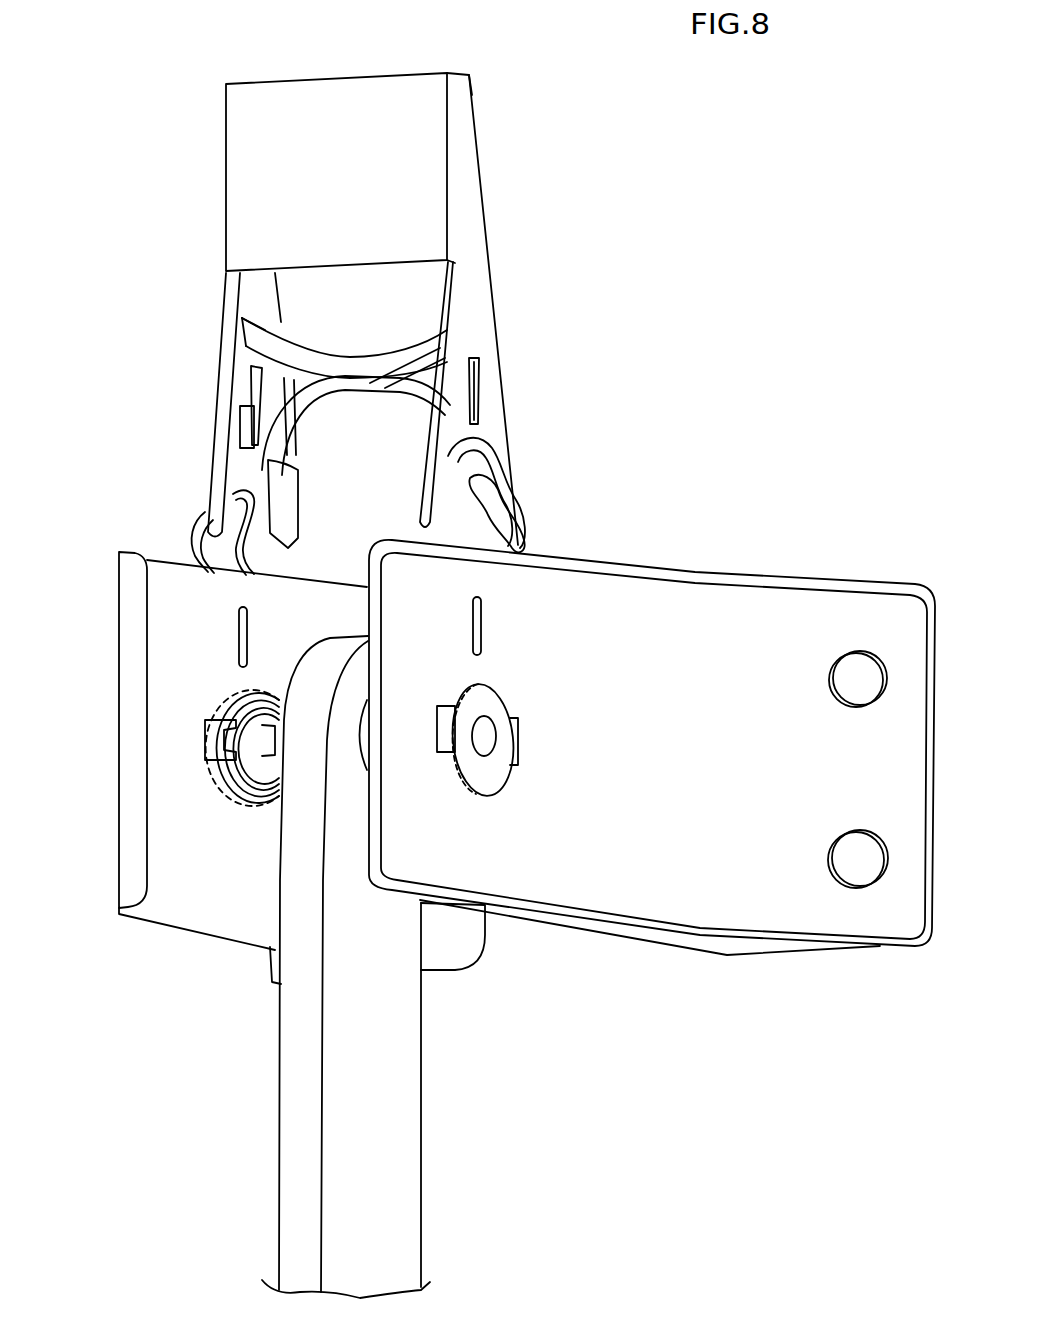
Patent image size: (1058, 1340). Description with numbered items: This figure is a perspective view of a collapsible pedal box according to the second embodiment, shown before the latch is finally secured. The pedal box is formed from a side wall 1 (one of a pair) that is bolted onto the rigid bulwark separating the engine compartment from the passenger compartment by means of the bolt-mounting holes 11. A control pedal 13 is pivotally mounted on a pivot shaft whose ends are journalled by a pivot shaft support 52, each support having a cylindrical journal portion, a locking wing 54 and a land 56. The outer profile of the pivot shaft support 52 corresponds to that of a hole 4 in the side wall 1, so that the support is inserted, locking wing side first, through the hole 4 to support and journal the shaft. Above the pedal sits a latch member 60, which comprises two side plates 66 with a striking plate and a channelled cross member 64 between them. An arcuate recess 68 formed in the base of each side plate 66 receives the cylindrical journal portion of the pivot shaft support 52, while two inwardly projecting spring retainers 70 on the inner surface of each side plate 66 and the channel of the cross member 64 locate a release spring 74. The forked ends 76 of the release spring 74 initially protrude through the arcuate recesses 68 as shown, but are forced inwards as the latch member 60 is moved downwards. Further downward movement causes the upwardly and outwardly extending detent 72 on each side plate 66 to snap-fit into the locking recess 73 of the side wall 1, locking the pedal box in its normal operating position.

The side wall 1 is at (764, 630).
The hole 4 is at (487, 793).
The bolt-mounting holes 11 is at (865, 690).
The control pedal 13 is at (380, 1147).
The pivot shaft support 52 is at (272, 742).
The locking wing 54 is at (240, 740).
The land 56 is at (262, 690).
The latch member 60 is at (222, 208).
The channelled cross member 64 is at (258, 345).
The side plates 66 is at (472, 290).
The arcuate recess 68 is at (490, 448).
The spring retainers 70 is at (244, 428).
The detent 72 is at (478, 378).
The locking recess 73 is at (242, 636).
The release spring 74 is at (258, 466).
The forked ends 76 is at (522, 522).